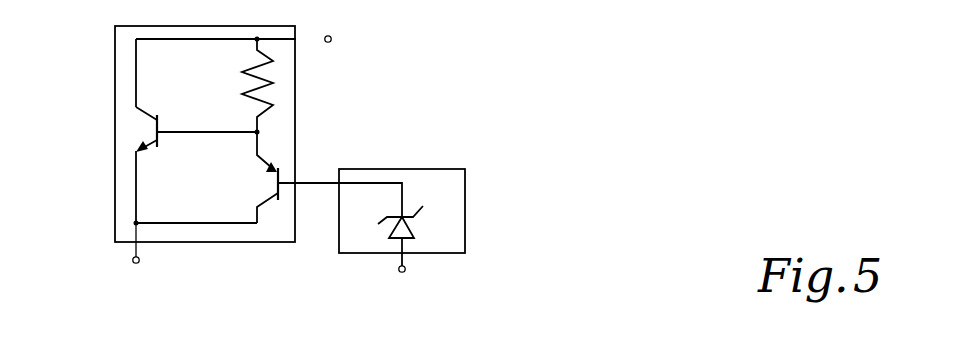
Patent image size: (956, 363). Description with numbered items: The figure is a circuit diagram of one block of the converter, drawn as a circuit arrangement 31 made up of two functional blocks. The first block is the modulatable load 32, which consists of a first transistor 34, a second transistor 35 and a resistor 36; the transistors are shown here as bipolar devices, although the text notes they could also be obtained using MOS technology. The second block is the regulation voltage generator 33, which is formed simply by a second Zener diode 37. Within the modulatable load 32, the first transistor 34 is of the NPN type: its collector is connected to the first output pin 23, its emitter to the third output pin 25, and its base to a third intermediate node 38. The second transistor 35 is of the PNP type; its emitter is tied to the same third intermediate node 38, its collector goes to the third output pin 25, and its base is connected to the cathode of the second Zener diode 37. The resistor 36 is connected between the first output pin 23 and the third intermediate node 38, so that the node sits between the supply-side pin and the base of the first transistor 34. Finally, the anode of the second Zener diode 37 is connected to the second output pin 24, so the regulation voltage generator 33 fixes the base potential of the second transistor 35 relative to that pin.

The first output pin 23 is at (331, 37).
The second output pin 24 is at (405, 272).
The third output pin 25 is at (138, 263).
The circuit arrangement 31 is at (468, 75).
The modulatable load 32 is at (127, 64).
The regulation voltage generator 33 is at (450, 178).
The first transistor 34 is at (157, 131).
The second transistor 35 is at (277, 183).
The resistor 36 is at (248, 82).
The second Zener diode 37 is at (413, 235).
The third intermediate node 38 is at (258, 132).